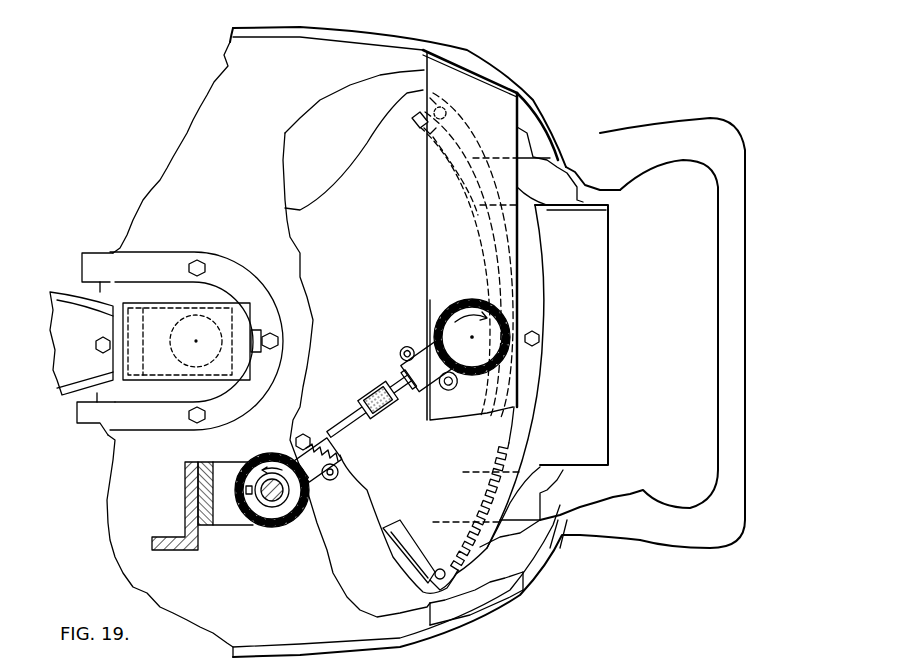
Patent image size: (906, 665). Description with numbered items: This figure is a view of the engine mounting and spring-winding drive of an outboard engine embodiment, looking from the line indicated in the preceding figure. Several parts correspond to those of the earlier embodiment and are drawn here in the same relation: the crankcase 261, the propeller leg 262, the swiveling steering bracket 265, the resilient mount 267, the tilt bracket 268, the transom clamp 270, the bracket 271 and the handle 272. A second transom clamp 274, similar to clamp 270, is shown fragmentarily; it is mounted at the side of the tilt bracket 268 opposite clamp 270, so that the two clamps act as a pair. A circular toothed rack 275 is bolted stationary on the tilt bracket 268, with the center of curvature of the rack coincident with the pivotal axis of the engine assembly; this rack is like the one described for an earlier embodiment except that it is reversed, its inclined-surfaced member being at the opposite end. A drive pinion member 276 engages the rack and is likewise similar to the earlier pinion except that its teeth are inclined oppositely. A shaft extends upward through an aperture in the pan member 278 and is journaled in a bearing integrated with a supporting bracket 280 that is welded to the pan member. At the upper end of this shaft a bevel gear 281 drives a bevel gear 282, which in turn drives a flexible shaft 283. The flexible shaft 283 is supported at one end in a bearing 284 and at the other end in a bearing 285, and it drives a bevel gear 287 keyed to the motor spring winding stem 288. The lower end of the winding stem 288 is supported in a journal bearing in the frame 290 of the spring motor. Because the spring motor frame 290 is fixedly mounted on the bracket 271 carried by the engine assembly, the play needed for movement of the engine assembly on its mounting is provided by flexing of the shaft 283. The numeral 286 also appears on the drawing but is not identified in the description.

The crankcase 261 is at (80, 334).
The propeller leg 262 is at (70, 291).
The swiveling steering bracket 265 is at (83, 432).
The resilient mount 267 is at (161, 306).
The tilt bracket 268 is at (590, 311).
The transom clamp 270 is at (605, 198).
The bracket 271 is at (185, 500).
The handle 272 is at (652, 134).
The transom clamp 274 is at (552, 480).
The circular toothed rack 275 is at (527, 435).
The drive pinion member 276 is at (402, 527).
The pan member 278 is at (240, 204).
The supporting bracket 280 is at (428, 240).
The bevel gear 281 is at (470, 300).
The bevel gear 282 is at (456, 372).
The flexible shaft 283 is at (346, 428).
The bearing 284 is at (410, 353).
The bearing 285 is at (340, 468).
The spring 286 is at (293, 450).
The bevel gear 287 is at (270, 527).
The motor spring winding stem 288 is at (322, 478).
The spring motor frame 290 is at (225, 468).